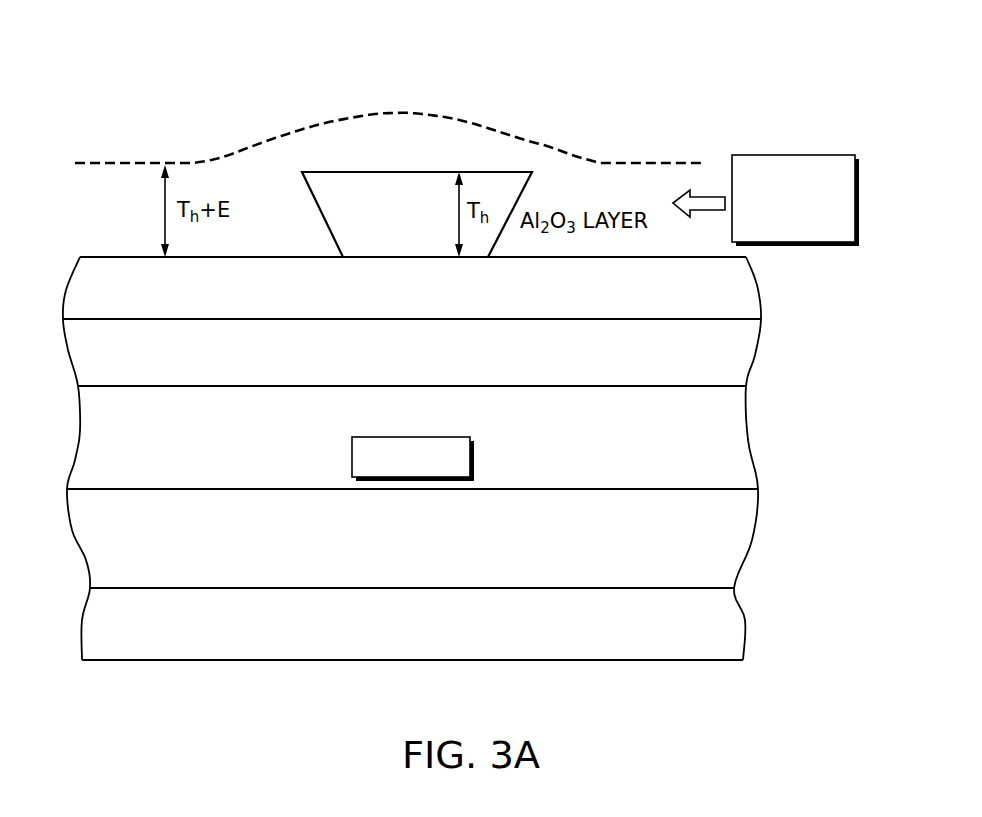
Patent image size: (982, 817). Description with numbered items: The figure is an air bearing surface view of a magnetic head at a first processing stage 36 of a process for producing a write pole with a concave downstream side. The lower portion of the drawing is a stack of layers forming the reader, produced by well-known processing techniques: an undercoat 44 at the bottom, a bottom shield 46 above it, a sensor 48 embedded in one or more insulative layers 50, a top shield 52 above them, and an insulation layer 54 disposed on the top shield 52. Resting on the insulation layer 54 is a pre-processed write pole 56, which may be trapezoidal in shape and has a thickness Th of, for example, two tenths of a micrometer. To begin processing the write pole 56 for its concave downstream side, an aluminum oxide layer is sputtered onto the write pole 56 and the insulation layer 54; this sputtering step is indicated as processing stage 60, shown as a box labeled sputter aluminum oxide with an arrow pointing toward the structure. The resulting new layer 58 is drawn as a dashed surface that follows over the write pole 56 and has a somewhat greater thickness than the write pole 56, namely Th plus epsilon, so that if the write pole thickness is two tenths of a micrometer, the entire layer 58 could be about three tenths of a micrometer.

The processing stage 36 is at (498, 59).
The undercoat 44 is at (100, 631).
The bottom shield 46 is at (80, 537).
The sensor 48 is at (350, 456).
The insulative layers 50 is at (84, 431).
The top shield 52 is at (735, 354).
The insulation layer 54 is at (70, 287).
The write pole 56 is at (321, 214).
The aluminum oxide layer 58 is at (633, 186).
The processing stage 60 is at (770, 156).